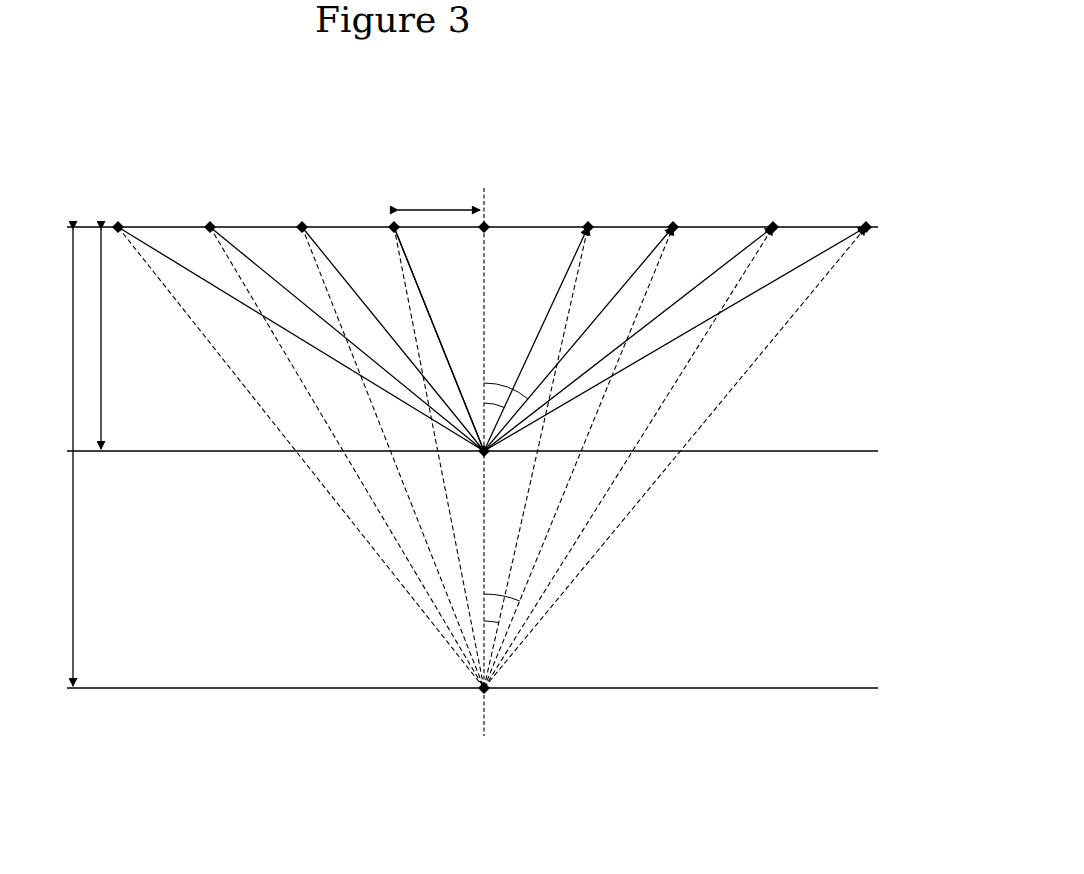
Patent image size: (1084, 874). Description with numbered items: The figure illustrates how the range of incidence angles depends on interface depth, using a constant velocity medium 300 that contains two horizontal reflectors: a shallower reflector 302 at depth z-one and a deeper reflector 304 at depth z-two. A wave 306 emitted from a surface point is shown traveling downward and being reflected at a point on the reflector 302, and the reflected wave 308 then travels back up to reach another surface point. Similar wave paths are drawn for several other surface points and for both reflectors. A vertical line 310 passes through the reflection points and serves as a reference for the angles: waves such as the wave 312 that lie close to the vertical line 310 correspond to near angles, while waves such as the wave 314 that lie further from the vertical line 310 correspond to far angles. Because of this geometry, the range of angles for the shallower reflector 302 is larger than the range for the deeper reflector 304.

The constant velocity medium 300 is at (501, 415).
The horizontal reflector 302 is at (838, 451).
The horizontal reflector 304 is at (846, 688).
The wave 306 is at (260, 267).
The reflected wave 308 is at (720, 267).
The vertical line 310 is at (486, 293).
The wave 312 is at (427, 307).
The wave 314 is at (203, 338).